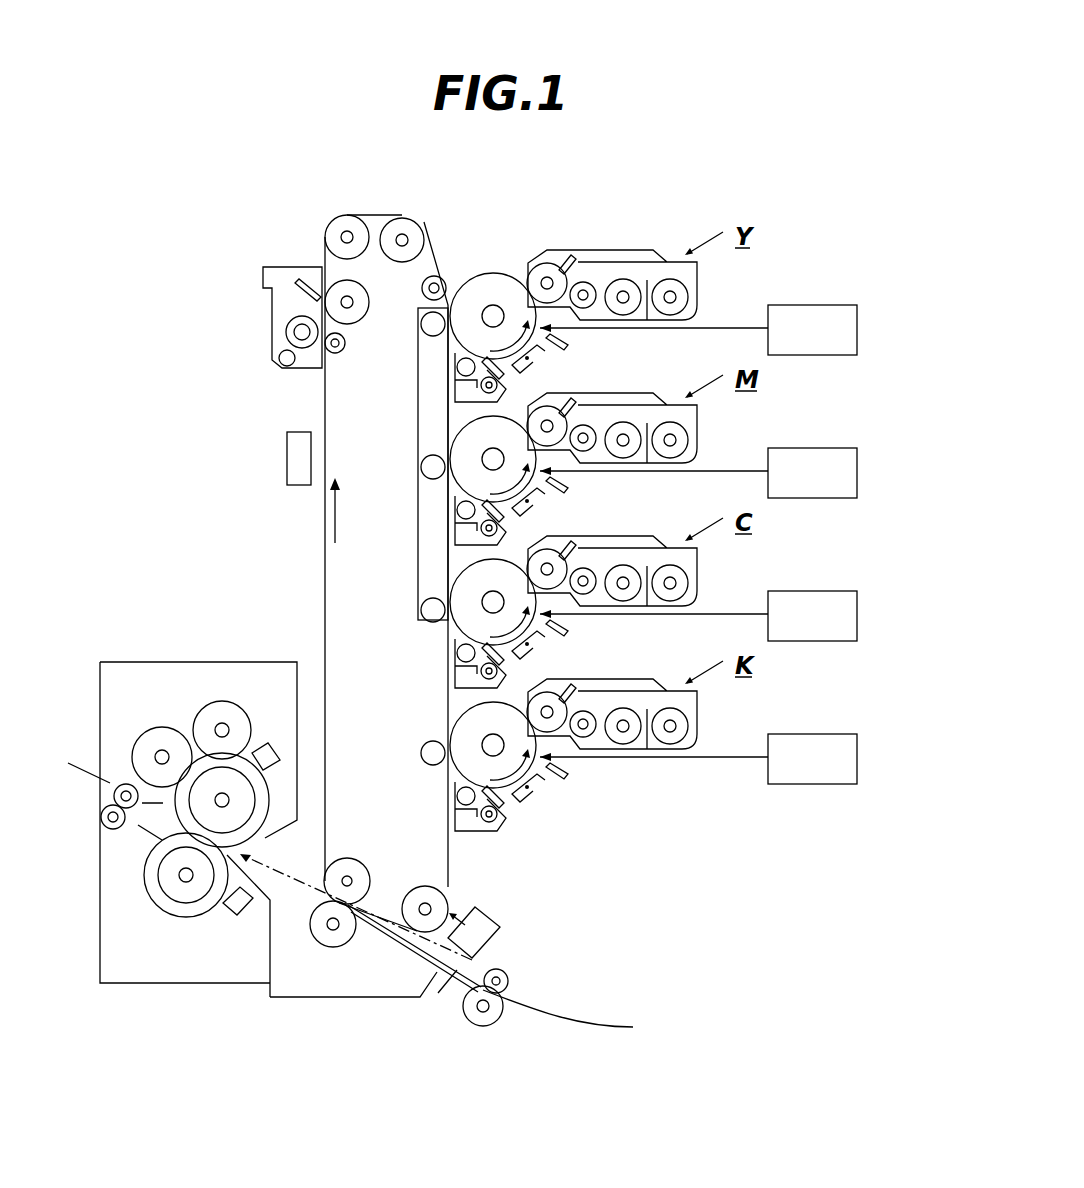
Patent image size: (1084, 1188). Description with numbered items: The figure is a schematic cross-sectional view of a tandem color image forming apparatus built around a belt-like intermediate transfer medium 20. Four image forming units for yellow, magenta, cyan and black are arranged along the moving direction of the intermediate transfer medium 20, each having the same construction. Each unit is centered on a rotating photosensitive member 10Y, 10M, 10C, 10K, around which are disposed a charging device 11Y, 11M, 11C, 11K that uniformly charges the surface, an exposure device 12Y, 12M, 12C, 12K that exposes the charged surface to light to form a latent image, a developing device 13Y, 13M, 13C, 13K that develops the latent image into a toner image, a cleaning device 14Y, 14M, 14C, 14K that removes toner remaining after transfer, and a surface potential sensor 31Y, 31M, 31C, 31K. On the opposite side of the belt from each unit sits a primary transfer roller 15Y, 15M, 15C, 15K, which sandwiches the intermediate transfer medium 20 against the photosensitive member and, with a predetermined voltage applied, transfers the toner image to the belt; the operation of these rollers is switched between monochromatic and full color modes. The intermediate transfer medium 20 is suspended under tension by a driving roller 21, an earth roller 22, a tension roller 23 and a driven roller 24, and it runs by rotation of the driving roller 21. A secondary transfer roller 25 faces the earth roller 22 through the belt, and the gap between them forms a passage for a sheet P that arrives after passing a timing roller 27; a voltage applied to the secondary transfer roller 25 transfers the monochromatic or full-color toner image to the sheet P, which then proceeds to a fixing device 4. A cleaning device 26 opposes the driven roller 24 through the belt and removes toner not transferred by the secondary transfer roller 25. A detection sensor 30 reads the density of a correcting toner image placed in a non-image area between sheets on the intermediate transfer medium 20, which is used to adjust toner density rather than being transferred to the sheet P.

The fixing device 4 is at (140, 663).
The photosensitive member 10Y is at (468, 297).
The photosensitive member 10M is at (470, 440).
The photosensitive member 10C is at (470, 583).
The photosensitive member 10K is at (470, 725).
The charging device 11Y is at (527, 364).
The charging device 11M is at (527, 507).
The charging device 11C is at (527, 650).
The charging device 11K is at (527, 793).
The exposure device 12Y is at (857, 329).
The exposure device 12M is at (857, 472).
The exposure device 12C is at (857, 615).
The exposure device 12K is at (857, 758).
The developing device 13Y is at (657, 252).
The developing device 13M is at (657, 395).
The developing device 13C is at (657, 538).
The developing device 13K is at (657, 681).
The cleaning device 14Y is at (463, 395).
The cleaning device 14M is at (463, 537).
The cleaning device 14C is at (463, 678).
The cleaning device 14K is at (463, 822).
The primary transfer roller 15Y is at (432, 335).
The primary transfer roller 15M is at (432, 478).
The primary transfer roller 15C is at (433, 623).
The primary transfer roller 15K is at (432, 765).
The intermediate transfer medium 20 is at (322, 555).
The driving roller 21 is at (445, 885).
The earth roller 22 is at (362, 860).
The tension roller 23 is at (328, 218).
The driven roller 24 is at (342, 278).
The secondary transfer roller 25 is at (350, 932).
The cleaning device 26 is at (273, 322).
The timing roller 27 is at (507, 973).
The detection sensor 30 is at (287, 462).
The surface potential sensor 31Y is at (569, 347).
The surface potential sensor 31M is at (569, 490).
The surface potential sensor 31C is at (569, 633).
The surface potential sensor 31K is at (569, 776).
The sheet P is at (553, 1022).